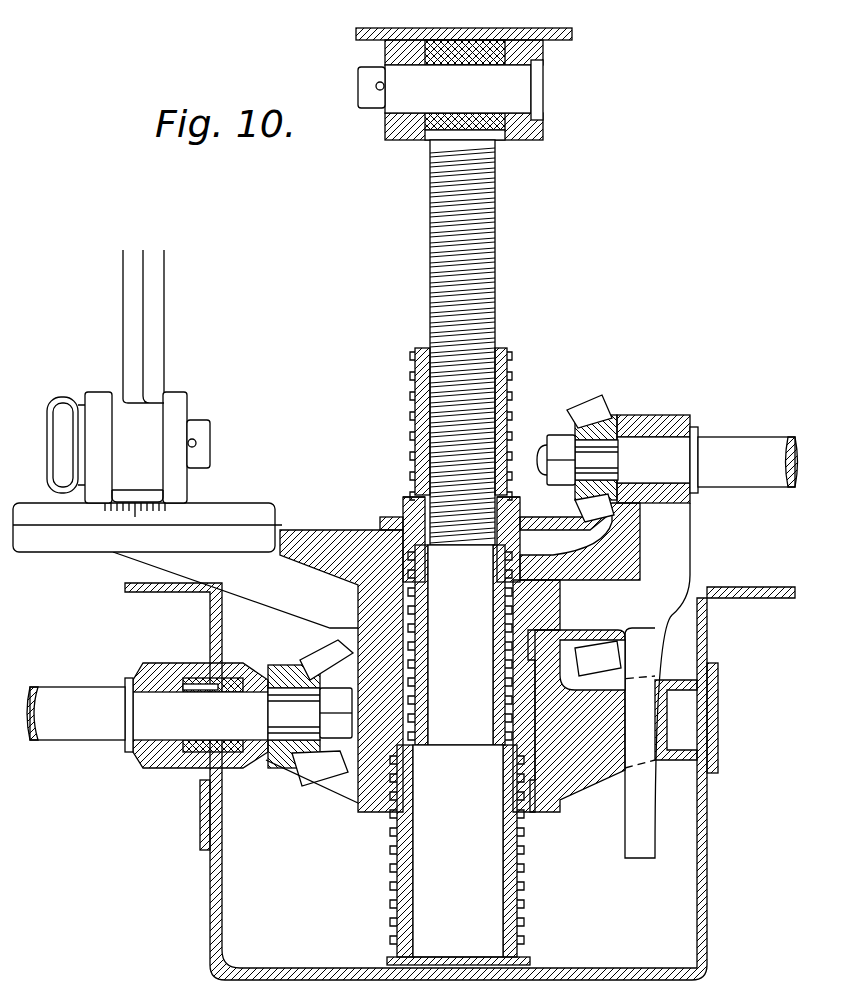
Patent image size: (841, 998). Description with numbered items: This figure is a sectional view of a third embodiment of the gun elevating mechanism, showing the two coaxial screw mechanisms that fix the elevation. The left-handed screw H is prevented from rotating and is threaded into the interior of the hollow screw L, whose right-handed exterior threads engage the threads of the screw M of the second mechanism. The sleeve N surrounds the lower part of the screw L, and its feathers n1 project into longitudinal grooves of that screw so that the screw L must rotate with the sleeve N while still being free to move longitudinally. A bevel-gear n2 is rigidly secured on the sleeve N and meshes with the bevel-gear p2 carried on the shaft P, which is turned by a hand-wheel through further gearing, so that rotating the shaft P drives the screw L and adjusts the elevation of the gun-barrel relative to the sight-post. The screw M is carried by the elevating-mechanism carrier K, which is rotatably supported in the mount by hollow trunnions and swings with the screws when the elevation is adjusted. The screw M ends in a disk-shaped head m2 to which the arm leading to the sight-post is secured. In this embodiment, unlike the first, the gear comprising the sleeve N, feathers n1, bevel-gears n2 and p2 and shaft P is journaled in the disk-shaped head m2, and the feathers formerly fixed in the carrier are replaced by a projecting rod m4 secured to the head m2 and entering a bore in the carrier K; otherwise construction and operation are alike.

The screw H is at (470, 243).
The hollow screw L is at (505, 400).
The sleeve N is at (392, 517).
The feathers n1 is at (507, 527).
The bevel-gear n2 is at (375, 517).
The bevel-gear p2 is at (612, 420).
The shaft P is at (745, 470).
The disk-shaped head m2 is at (653, 540).
The projecting rod m4 is at (643, 850).
The elevating-mechanism carrier K is at (345, 782).
The screw M is at (510, 866).